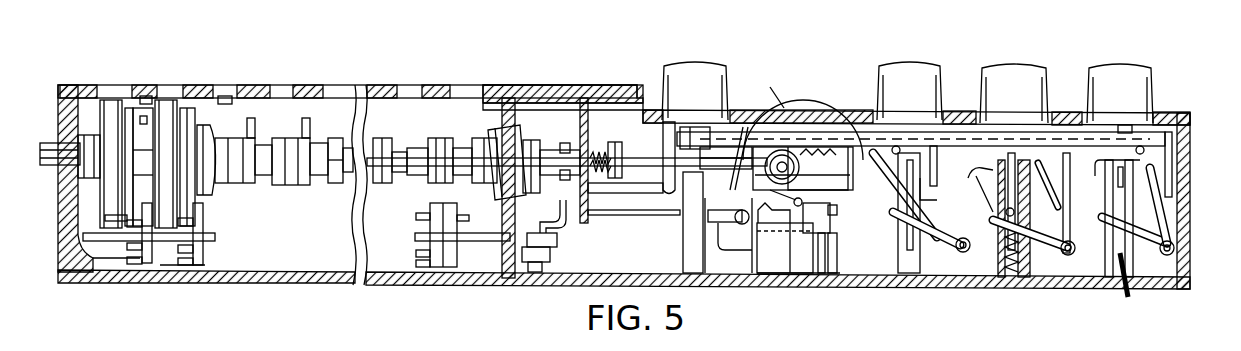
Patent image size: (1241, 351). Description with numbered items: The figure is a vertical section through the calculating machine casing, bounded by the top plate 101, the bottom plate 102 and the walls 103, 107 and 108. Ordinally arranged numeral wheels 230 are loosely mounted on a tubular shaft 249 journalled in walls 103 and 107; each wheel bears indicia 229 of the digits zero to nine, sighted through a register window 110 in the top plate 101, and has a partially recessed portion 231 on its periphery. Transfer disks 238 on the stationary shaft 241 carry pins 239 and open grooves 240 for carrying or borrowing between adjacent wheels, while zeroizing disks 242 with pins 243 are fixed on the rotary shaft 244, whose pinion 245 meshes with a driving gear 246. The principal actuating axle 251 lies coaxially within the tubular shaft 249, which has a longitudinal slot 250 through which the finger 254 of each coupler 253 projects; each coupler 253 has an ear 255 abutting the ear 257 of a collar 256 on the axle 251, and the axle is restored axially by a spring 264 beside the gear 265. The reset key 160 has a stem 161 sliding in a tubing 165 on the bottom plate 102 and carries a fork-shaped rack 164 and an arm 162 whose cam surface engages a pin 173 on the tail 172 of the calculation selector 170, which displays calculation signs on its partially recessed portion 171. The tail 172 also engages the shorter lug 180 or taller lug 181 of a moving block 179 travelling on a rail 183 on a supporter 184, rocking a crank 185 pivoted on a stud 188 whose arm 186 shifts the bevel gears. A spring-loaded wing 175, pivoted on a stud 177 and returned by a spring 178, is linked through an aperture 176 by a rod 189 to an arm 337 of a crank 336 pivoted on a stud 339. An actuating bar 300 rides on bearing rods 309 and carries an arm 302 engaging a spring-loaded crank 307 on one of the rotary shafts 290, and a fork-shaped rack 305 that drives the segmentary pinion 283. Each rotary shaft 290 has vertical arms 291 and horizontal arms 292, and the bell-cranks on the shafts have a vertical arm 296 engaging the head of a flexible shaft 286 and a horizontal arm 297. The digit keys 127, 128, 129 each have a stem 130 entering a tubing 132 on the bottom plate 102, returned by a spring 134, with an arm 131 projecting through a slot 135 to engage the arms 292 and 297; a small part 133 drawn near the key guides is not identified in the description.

The top plate 101 is at (536, 94).
The bottom plate 102 is at (300, 275).
The wall 103 is at (62, 218).
The wall 107 is at (504, 259).
The wall 108 is at (595, 215).
The register window 110 is at (282, 93).
The digit key 127 is at (906, 78).
The digit key 128 is at (1012, 80).
The digit key 129 is at (1126, 80).
The stem 130 is at (1122, 126).
The arm 131 is at (1100, 218).
The tubing 132 is at (1031, 267).
The pin 133 is at (1120, 190).
The spring 134 is at (997, 267).
The slot 135 is at (1136, 284).
The reset key 160 is at (692, 78).
The stem 161 is at (697, 127).
The arm 162 is at (787, 148).
The fork-shaped rack 164 is at (588, 192).
The tubing 165 is at (690, 248).
The calculation selector 170 is at (812, 103).
The partially recessed portion 171 is at (845, 139).
The tail 172 is at (818, 191).
The pin 173 is at (794, 201).
The spring-loaded wing 175 is at (737, 242).
The aperture 176 is at (730, 230).
The stud 177 is at (744, 125).
The spring 178 is at (727, 170).
The moving block 179 is at (800, 240).
The shorter lug 180 is at (776, 215).
The taller lug 181 is at (830, 210).
The rail 183 is at (775, 233).
The supporter 184 is at (785, 275).
The crank 185 is at (826, 236).
The arm 186 is at (838, 212).
The stud 188 is at (838, 258).
The rod 189 is at (538, 222).
The indicia 229 is at (172, 100).
The numeral wheel 230 is at (186, 118).
The partially recessed portion 231 is at (152, 108).
The transfer disk 238 is at (205, 258).
The pins 239 is at (180, 266).
The open grooves 240 is at (205, 218).
The stationary shaft 241 is at (215, 237).
The zeroizing disk 242 is at (388, 150).
The pins 243 is at (383, 183).
The rotary shaft 244 is at (412, 148).
The pinion 245 is at (565, 148).
The driving gear 246 is at (560, 202).
The tubular shaft 249 is at (510, 140).
The longitudinal slot 250 is at (208, 135).
The principal actuating axle 251 is at (56, 155).
The coupler 253 is at (300, 148).
The finger 254 is at (254, 130).
The ear 255 is at (319, 143).
The collar 256 is at (337, 172).
The ear 257 is at (332, 145).
The spring 264 is at (597, 150).
The gear 265 is at (618, 150).
The segmentary pinion 283 is at (767, 88).
The flexible shaft 286 is at (991, 201).
The rotary shaft 290 is at (1048, 242).
The vertical arm 291 is at (1062, 200).
The horizontal arm 292 is at (1032, 249).
The vertical arm 296 is at (1160, 205).
The horizontal arm 297 is at (1172, 238).
The actuating bar 300 is at (943, 140).
The arm 302 is at (938, 180).
The fork-shaped rack 305 is at (850, 182).
The spring-loaded crank 307 is at (905, 213).
The bearing rods 309 is at (896, 146).
The crank 336 is at (548, 253).
The arm 337 is at (548, 240).
The stud 339 is at (542, 267).